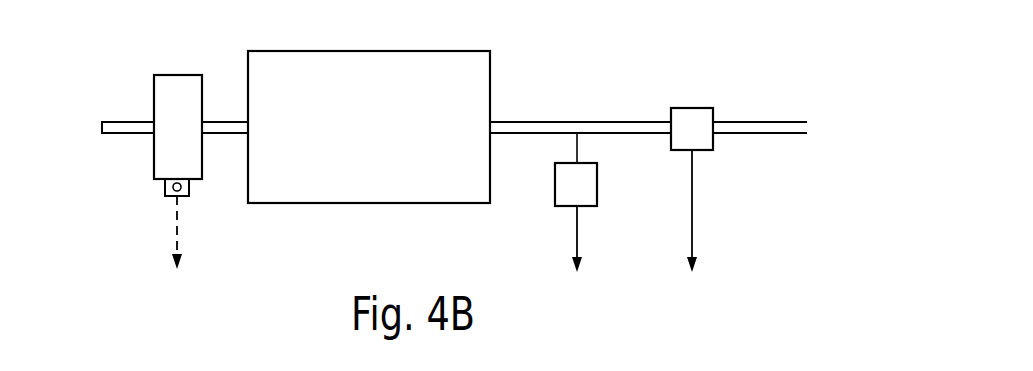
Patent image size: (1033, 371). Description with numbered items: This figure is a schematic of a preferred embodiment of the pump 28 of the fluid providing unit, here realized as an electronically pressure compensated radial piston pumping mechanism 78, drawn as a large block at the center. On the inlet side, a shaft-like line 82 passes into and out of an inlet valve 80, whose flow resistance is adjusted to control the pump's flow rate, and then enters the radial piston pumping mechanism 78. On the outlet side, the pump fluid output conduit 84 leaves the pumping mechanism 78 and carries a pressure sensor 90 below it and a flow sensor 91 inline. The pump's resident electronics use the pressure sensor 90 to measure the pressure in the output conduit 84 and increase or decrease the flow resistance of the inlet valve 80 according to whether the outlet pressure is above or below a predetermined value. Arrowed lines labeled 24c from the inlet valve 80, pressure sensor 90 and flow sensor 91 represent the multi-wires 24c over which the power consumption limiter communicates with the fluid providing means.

The pump 28 is at (445, 41).
The radial piston pumping mechanism 78 is at (323, 50).
The inlet valve 80 is at (177, 75).
The input shaft 82 is at (128, 122).
The pump fluid output conduit 84 is at (528, 122).
The pressure sensor 90 is at (587, 195).
The flow sensor 91 is at (703, 140).
The multi-wires 24c is at (178, 213).